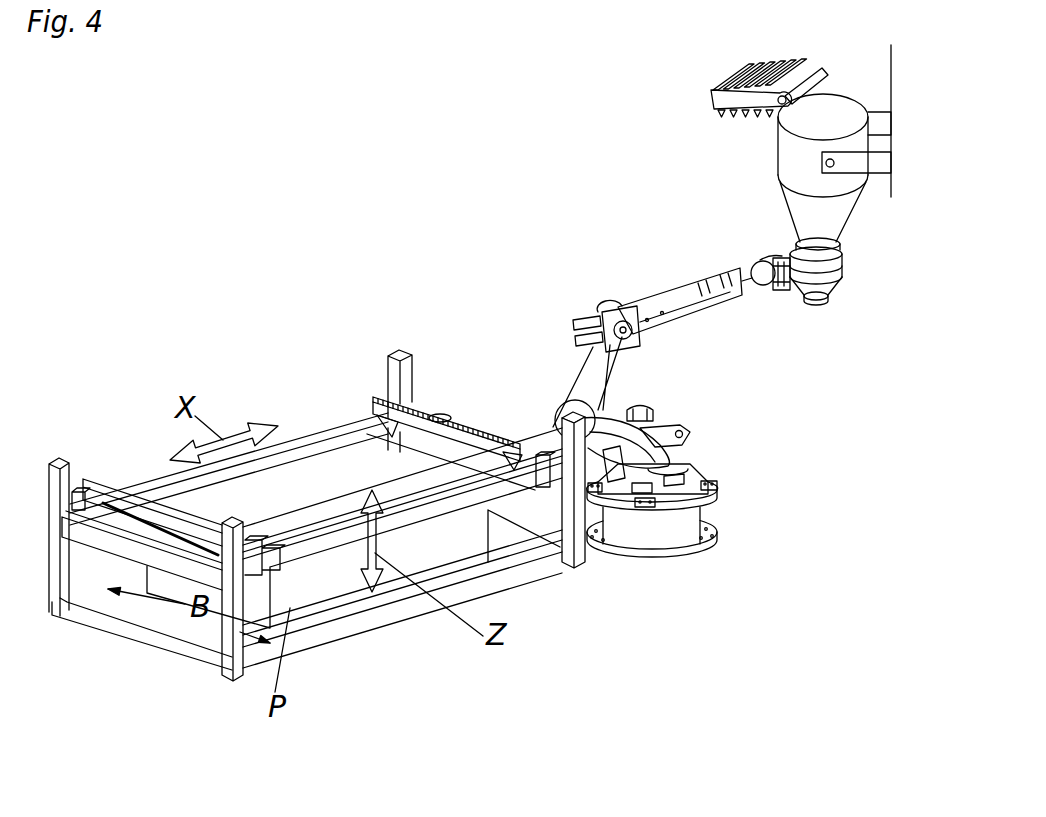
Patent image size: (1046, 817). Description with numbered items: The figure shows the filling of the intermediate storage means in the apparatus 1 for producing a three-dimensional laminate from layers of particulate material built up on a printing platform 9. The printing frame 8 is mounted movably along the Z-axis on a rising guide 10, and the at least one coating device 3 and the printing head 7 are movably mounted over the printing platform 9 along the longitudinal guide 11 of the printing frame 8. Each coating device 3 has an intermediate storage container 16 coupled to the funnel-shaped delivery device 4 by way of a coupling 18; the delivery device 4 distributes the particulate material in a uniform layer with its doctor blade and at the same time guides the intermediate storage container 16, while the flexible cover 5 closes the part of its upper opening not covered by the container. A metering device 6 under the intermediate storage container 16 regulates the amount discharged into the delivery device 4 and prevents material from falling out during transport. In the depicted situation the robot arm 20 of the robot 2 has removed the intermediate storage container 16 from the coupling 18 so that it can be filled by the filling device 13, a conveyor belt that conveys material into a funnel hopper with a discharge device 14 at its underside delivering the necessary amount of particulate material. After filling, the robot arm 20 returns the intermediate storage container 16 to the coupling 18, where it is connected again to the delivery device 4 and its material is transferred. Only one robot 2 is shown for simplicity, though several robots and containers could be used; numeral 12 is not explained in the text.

The apparatus 1 is at (108, 315).
The robot 2 is at (610, 275).
The coating device 3 is at (368, 372).
The delivery device 4 is at (148, 527).
The flexible cover 5 is at (488, 438).
The metering device 6 is at (826, 298).
The printing head 7 is at (155, 503).
The printing frame 8 is at (450, 512).
The printing platform 9 is at (330, 617).
The rising guide 10 is at (230, 615).
The longitudinal guide 11 is at (332, 433).
The build area 12 is at (56, 361).
The filling device 13 is at (713, 92).
The discharge device 14 is at (815, 250).
The intermediate storage container 16 is at (826, 271).
The coupling 18 is at (443, 415).
The robot arm 20 is at (778, 280).